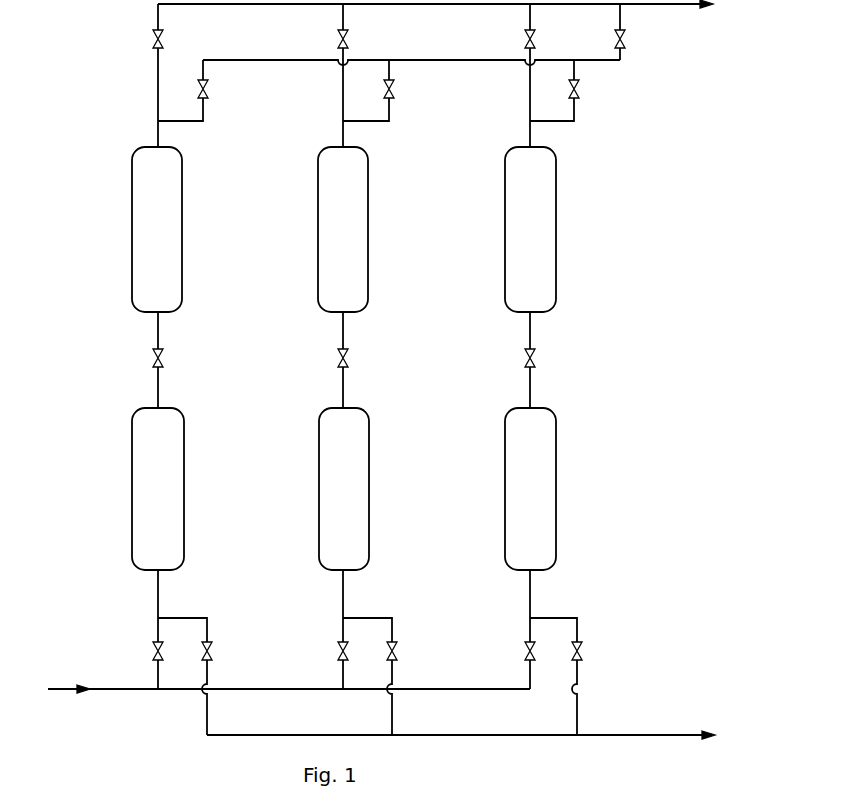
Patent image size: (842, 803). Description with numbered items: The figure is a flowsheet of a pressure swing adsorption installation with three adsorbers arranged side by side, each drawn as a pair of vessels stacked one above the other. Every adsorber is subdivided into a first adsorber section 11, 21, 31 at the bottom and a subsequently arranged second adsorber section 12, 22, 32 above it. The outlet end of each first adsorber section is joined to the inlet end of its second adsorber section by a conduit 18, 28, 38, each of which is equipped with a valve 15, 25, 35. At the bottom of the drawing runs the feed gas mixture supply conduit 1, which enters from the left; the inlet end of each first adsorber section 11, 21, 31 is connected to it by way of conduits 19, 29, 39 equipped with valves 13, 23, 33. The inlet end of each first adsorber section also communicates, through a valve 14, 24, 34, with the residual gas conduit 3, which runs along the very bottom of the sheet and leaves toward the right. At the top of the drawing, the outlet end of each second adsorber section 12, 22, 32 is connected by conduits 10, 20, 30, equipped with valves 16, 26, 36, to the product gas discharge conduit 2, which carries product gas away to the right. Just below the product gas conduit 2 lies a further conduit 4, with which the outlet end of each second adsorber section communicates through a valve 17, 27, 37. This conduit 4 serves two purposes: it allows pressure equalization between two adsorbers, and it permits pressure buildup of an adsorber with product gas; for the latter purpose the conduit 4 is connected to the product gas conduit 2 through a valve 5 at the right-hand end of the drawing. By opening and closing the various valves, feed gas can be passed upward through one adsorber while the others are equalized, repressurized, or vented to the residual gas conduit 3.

The feed gas mixture supply conduit 1 is at (48, 689).
The product gas discharge conduit 2 is at (678, 5).
The residual gas conduit 3 is at (648, 735).
The conduit 4 is at (436, 60).
The valve 5 is at (624, 41).
The conduit 10 is at (157, 99).
The first adsorber section 11 is at (133, 495).
The second adsorber section 12 is at (133, 223).
The valve 13 is at (155, 651).
The valve 14 is at (210, 653).
The valve 15 is at (156, 358).
The valve 16 is at (162, 43).
The valve 17 is at (207, 92).
The conduit 18 is at (160, 395).
The conduit 19 is at (165, 600).
The conduit 20 is at (343, 97).
The first adsorber section 21 is at (319, 495).
The second adsorber section 22 is at (318, 223).
The valve 23 is at (341, 651).
The valve 24 is at (396, 653).
The valve 25 is at (341, 358).
The valve 26 is at (347, 43).
The valve 27 is at (393, 92).
The conduit 28 is at (345, 395).
The conduit 29 is at (348, 600).
The conduit 30 is at (528, 93).
The first adsorber section 31 is at (505, 495).
The second adsorber section 32 is at (505, 215).
The valve 33 is at (528, 651).
The valve 34 is at (581, 653).
The valve 35 is at (528, 358).
The valve 36 is at (534, 43).
The valve 37 is at (578, 93).
The conduit 38 is at (532, 395).
The conduit 39 is at (533, 600).